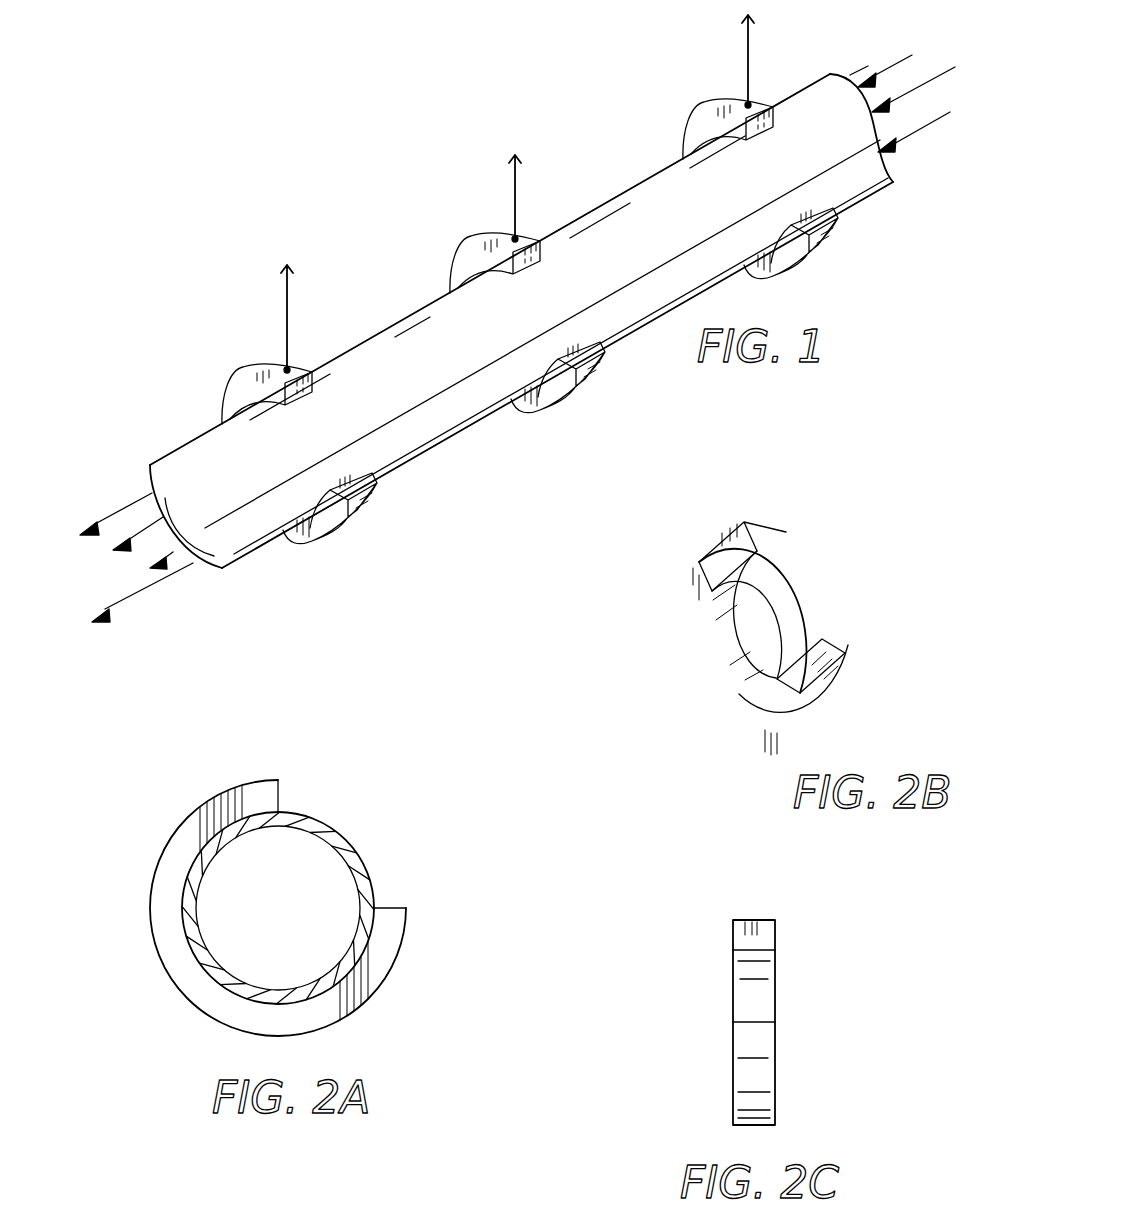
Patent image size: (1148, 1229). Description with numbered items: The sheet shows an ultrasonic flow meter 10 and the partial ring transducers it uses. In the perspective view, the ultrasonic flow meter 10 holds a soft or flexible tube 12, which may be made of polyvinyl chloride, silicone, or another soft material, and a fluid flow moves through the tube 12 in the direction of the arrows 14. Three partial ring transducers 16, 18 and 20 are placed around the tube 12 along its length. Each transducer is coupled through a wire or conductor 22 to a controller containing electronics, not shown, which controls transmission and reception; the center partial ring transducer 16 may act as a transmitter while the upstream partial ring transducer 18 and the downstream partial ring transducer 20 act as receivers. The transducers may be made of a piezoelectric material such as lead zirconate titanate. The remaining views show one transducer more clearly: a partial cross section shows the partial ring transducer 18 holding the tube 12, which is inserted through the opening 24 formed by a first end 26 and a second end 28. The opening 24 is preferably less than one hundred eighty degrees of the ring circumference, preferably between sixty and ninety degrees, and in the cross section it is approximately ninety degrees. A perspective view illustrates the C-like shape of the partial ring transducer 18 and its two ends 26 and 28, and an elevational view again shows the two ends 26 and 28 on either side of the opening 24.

In FIG. 1, the ultrasonic flow meter 10 is at (588, 126).
In FIG. 1, the tube 12 is at (656, 180).
In FIG. 2A, the tube 12 is at (332, 846).
In FIG. 1, the arrows 14 is at (883, 78).
In FIG. 1, the center partial ring transducer 16 is at (470, 250).
In FIG. 1, the upstream partial ring transducer 18 is at (226, 405).
In FIG. 2A, the upstream partial ring transducer 18 is at (284, 881).
In FIG. 2B, the upstream partial ring transducer 18 is at (760, 638).
In FIG. 2C, the upstream partial ring transducer 18 is at (755, 1022).
In FIG. 1, the downstream partial ring transducer 20 is at (706, 120).
In FIG. 1, the wire or conductor 22 is at (288, 310).
In FIG. 2A, the opening 24 is at (284, 881).
In FIG. 2C, the opening 24 is at (751, 1022).
In FIG. 2A, the first end 26 is at (279, 797).
In FIG. 2B, the first end 26 is at (773, 565).
In FIG. 2C, the first end 26 is at (757, 937).
In FIG. 2A, the second end 28 is at (392, 907).
In FIG. 2B, the second end 28 is at (833, 682).
In FIG. 2C, the second end 28 is at (762, 1022).